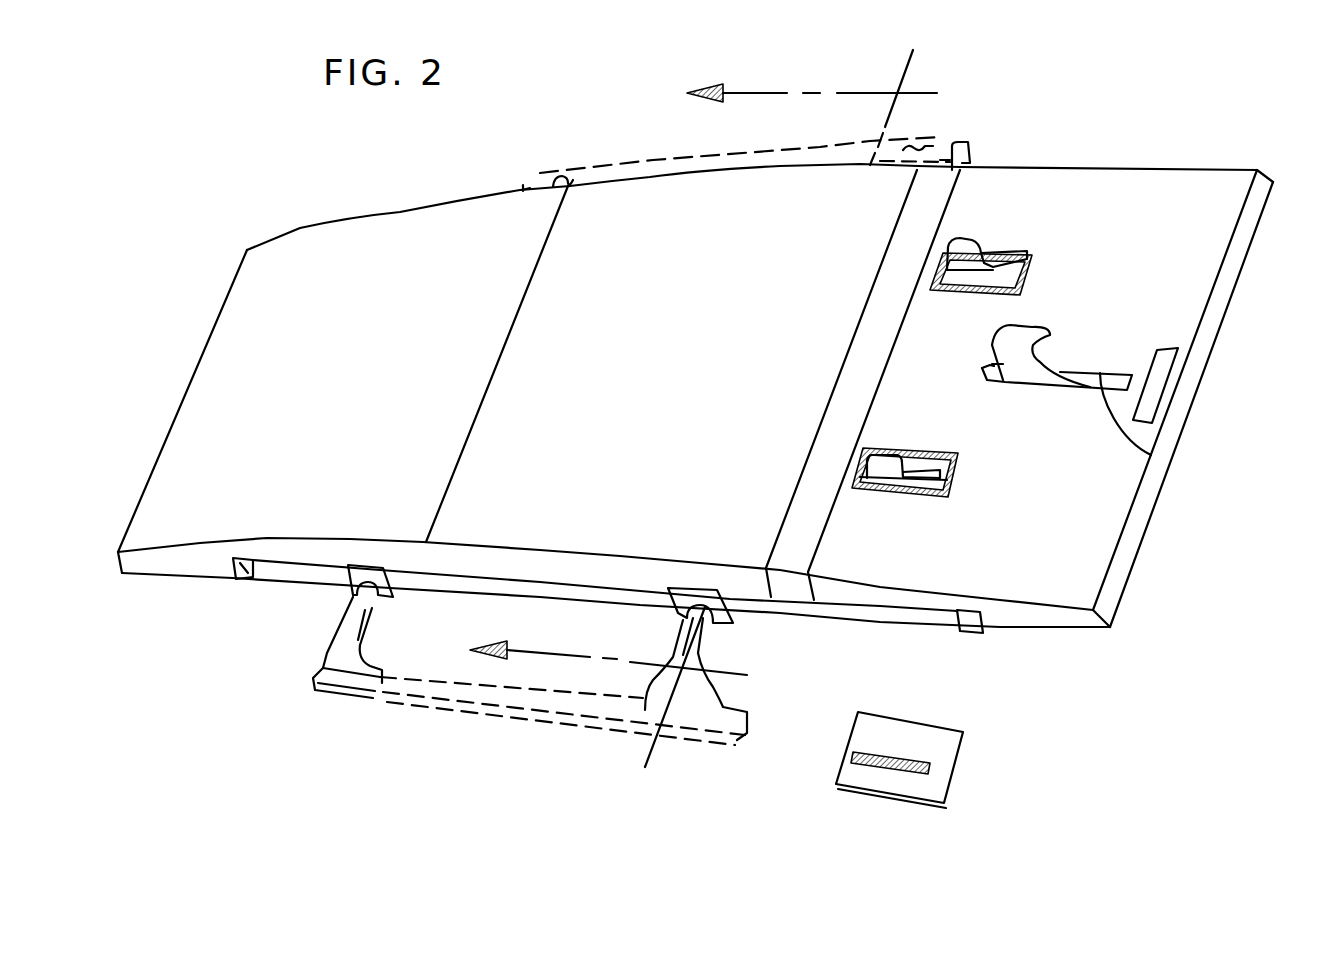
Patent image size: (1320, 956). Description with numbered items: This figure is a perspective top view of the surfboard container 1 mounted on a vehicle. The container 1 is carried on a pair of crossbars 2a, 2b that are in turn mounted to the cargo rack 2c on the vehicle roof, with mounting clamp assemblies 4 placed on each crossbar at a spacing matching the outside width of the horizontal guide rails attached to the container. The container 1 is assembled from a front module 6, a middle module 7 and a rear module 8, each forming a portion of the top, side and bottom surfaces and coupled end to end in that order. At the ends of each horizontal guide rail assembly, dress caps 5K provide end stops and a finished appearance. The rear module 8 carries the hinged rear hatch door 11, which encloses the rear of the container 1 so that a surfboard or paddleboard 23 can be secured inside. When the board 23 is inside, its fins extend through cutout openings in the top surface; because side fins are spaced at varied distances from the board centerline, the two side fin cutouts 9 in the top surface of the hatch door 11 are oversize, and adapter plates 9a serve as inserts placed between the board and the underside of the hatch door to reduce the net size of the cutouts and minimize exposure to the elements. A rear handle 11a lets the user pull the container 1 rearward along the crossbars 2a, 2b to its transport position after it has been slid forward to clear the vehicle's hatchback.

The surfboard container 1 is at (181, 325).
The crossbar 2a is at (352, 623).
The crossbar 2b is at (707, 643).
The cargo rack 2c is at (462, 697).
The mounting clamp assemblies 4 is at (687, 408).
The dress caps 5K is at (240, 578).
The front module 6 is at (400, 220).
The middle module 7 is at (650, 187).
The rear module 8 is at (958, 143).
The side fin cutouts 9 is at (1028, 280).
The adapter plates 9a is at (918, 490).
The rear hatch door 11 is at (1223, 187).
The rear handle 11a is at (1180, 347).
The surfboard 23 is at (975, 238).